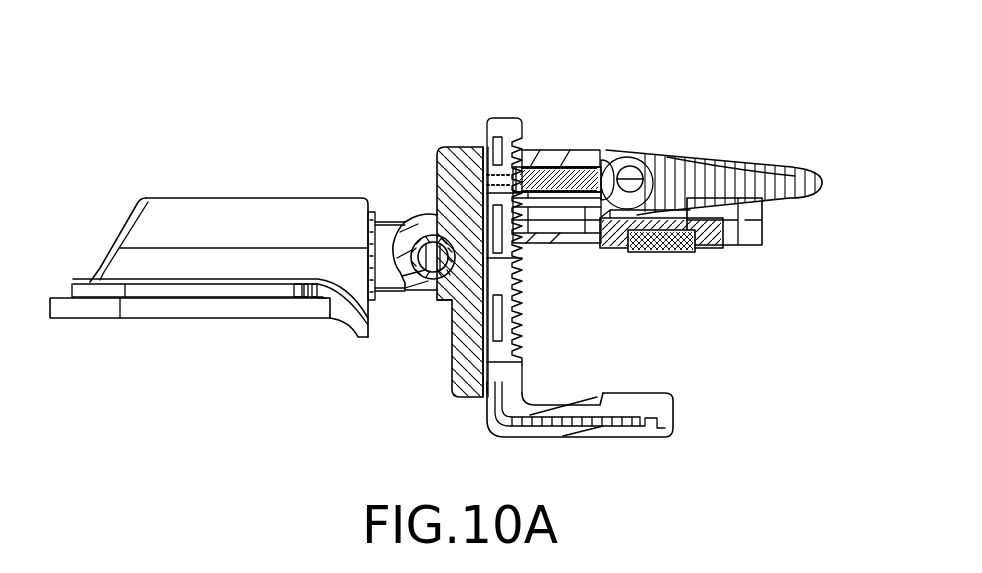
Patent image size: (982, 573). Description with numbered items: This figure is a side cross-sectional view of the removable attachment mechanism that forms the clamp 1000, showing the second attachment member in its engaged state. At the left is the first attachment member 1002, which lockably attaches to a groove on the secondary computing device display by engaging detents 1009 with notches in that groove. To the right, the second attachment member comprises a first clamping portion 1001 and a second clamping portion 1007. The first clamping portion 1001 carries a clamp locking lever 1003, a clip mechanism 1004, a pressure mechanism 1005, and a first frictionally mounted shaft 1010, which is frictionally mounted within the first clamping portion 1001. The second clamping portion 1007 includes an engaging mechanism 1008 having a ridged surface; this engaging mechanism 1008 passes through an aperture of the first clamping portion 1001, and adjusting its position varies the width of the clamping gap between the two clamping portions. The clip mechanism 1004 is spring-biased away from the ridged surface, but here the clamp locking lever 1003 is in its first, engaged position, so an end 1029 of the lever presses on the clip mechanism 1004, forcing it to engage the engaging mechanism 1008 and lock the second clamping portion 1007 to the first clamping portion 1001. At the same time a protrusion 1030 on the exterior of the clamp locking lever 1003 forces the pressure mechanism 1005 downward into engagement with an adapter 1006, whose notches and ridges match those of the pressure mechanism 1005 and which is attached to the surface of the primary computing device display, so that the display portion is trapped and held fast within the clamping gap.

The clamp 1000 is at (413, 95).
The first clamping portion 1001 is at (553, 147).
The first attachment member 1002 is at (259, 198).
The clamp locking lever 1003 is at (742, 166).
The clip mechanism 1004 is at (590, 164).
The pressure mechanism 1005 is at (715, 247).
The adapter 1006 is at (668, 252).
The second clamping portion 1007 is at (678, 413).
The engaging mechanism 1008 is at (520, 298).
The detents 1009 is at (300, 292).
The first frictionally mounted shaft 1010 is at (428, 298).
The end of the clamp locking lever 1029 is at (645, 168).
The protrusion 1030 is at (670, 205).